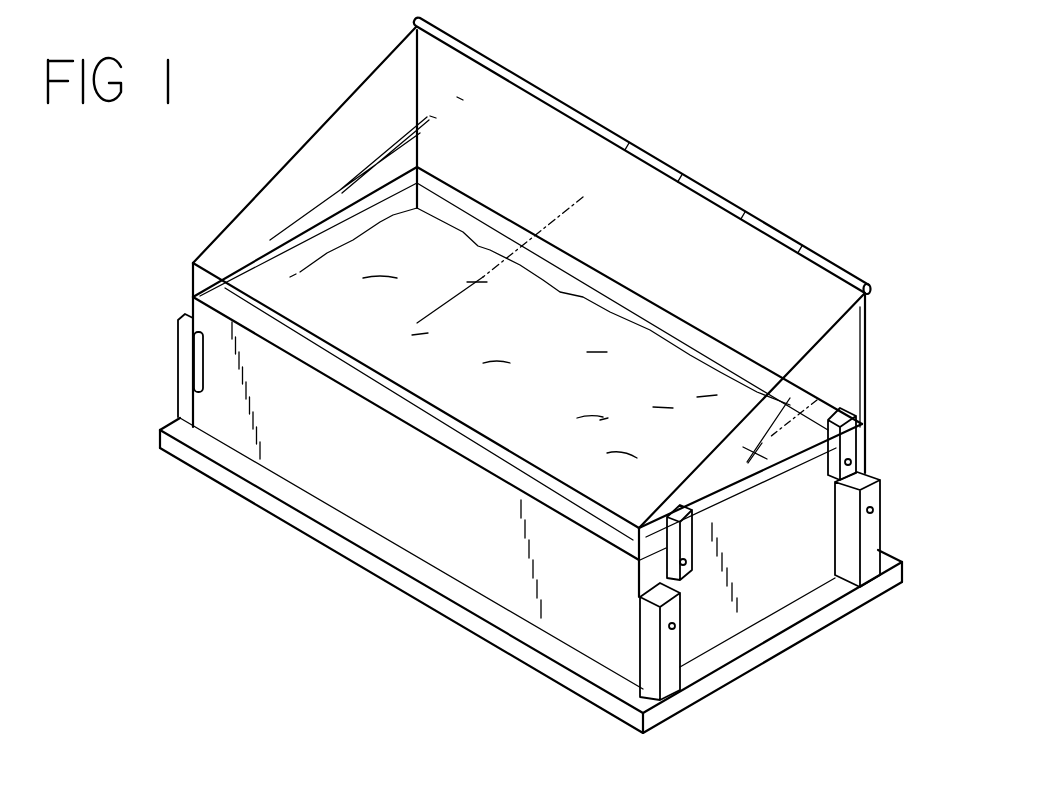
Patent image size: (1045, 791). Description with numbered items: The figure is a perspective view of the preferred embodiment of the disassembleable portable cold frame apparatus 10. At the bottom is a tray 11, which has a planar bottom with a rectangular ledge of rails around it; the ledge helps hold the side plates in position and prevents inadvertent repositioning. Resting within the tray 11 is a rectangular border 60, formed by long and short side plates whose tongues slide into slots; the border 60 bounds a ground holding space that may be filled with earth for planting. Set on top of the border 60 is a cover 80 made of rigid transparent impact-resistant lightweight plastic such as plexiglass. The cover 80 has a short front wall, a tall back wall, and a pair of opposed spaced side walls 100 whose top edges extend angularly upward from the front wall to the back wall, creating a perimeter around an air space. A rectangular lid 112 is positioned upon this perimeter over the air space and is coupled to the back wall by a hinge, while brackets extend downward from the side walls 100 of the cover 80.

The disassembleable portable cold frame apparatus 10 is at (565, 289).
The tray 11 is at (523, 673).
The rectangular border 60 is at (347, 460).
The cover 80 is at (820, 290).
The side walls 100 is at (788, 416).
The rectangular lid 112 is at (657, 233).